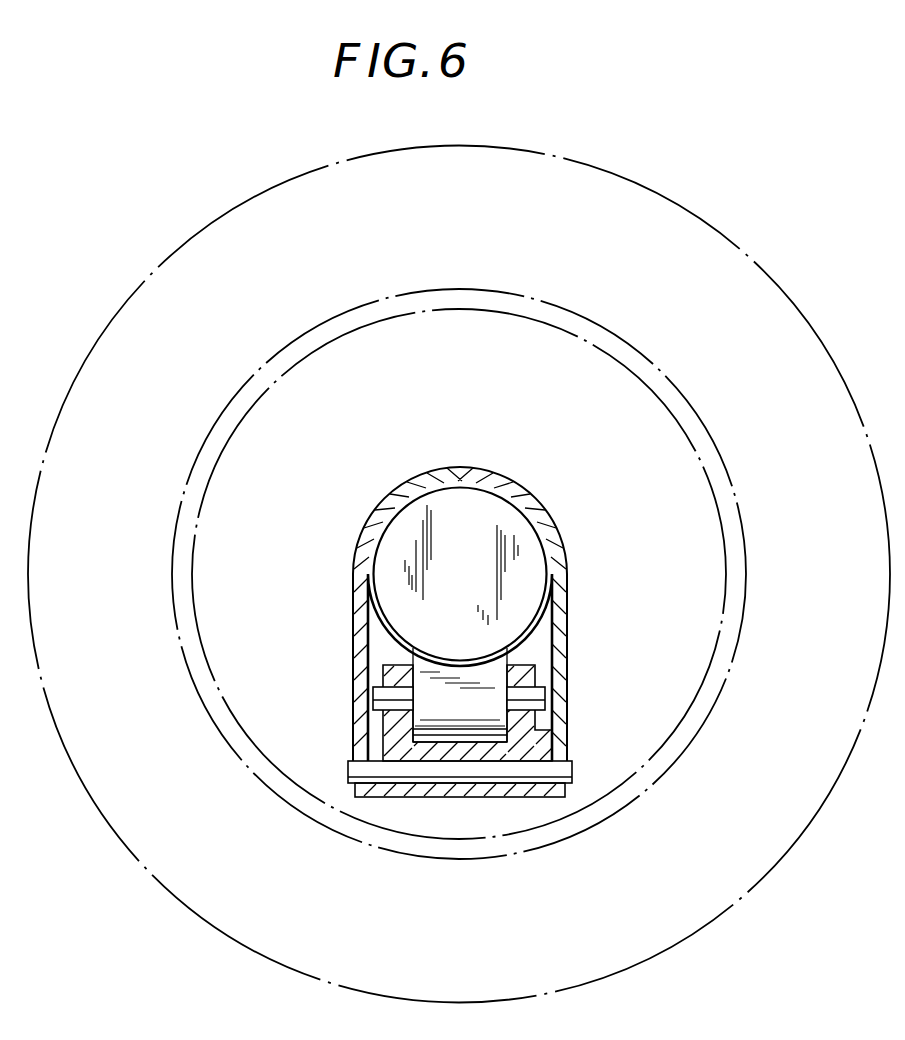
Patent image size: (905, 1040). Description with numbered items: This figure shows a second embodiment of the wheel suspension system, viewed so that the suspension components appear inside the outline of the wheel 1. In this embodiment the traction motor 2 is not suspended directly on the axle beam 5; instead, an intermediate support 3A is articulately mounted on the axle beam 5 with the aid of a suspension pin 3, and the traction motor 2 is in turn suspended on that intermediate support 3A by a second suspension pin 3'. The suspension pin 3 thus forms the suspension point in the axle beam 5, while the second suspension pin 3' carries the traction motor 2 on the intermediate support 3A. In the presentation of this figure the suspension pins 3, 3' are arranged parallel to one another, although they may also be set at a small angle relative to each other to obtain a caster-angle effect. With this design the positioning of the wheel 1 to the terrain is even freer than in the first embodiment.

The wheel 1 is at (628, 208).
The traction motor 2 is at (508, 527).
The suspension pin 3 is at (442, 752).
The second suspension pin 3' is at (495, 667).
The intermediate support 3A is at (527, 743).
The axle beam 5 is at (375, 517).